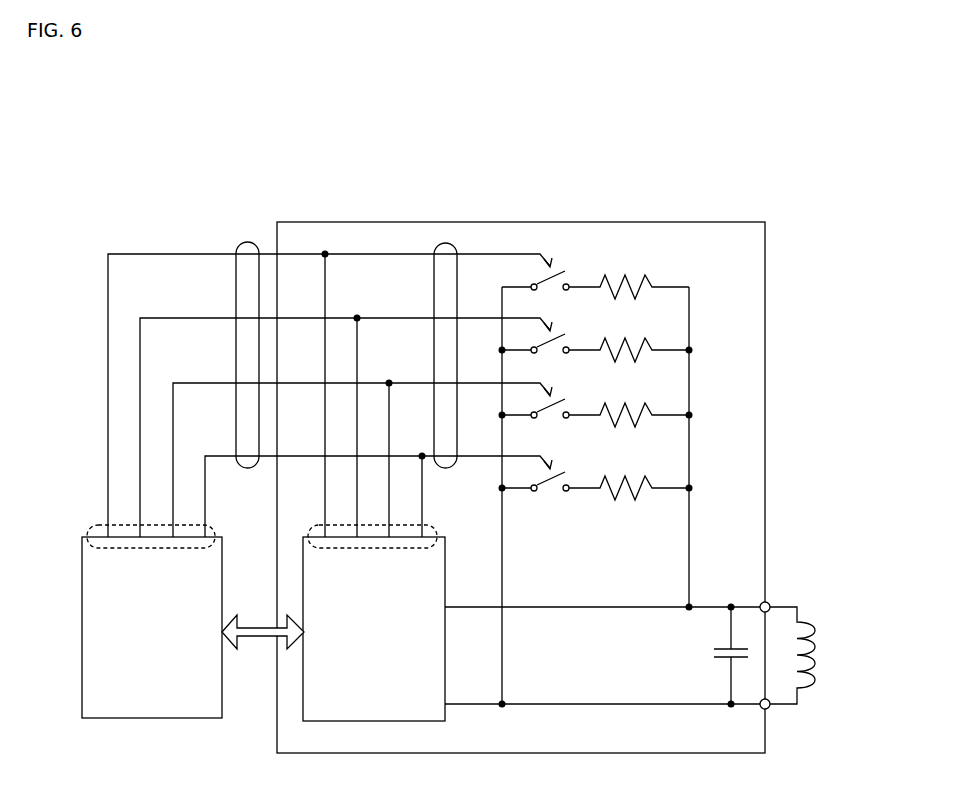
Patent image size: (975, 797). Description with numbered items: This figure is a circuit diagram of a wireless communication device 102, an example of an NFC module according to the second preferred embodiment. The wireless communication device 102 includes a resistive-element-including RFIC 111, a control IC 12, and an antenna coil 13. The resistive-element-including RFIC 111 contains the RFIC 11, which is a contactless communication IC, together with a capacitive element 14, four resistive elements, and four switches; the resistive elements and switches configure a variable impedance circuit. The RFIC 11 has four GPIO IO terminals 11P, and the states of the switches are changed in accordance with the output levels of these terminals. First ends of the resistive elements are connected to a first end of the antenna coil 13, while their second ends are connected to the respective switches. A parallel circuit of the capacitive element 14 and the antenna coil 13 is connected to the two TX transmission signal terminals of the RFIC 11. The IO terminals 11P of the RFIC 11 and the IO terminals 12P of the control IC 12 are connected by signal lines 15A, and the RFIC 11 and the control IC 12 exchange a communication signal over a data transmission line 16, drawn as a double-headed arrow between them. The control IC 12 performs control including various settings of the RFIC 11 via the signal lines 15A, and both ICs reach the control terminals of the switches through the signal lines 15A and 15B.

The wireless communication device 102 is at (449, 432).
The resistive-element-including RFIC 111 is at (765, 222).
The RFIC 11 is at (445, 578).
The IO terminals 11P is at (440, 526).
The control IC 12 is at (222, 573).
The IO terminals 12P is at (222, 526).
The antenna coil 13 is at (808, 622).
The capacitive element 14 is at (713, 653).
The signal lines 15A is at (248, 242).
The signal lines 15B is at (445, 243).
The data transmission line 16 is at (258, 640).